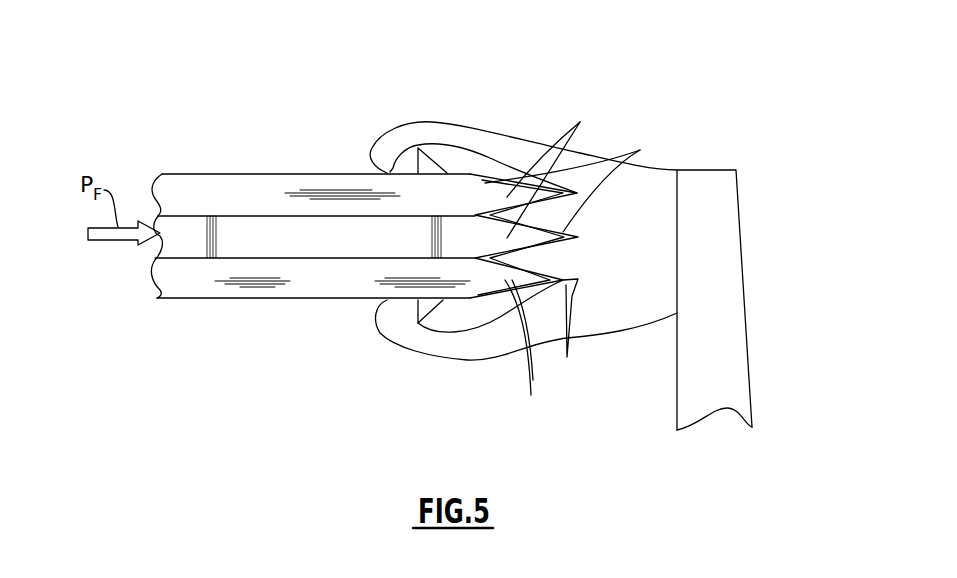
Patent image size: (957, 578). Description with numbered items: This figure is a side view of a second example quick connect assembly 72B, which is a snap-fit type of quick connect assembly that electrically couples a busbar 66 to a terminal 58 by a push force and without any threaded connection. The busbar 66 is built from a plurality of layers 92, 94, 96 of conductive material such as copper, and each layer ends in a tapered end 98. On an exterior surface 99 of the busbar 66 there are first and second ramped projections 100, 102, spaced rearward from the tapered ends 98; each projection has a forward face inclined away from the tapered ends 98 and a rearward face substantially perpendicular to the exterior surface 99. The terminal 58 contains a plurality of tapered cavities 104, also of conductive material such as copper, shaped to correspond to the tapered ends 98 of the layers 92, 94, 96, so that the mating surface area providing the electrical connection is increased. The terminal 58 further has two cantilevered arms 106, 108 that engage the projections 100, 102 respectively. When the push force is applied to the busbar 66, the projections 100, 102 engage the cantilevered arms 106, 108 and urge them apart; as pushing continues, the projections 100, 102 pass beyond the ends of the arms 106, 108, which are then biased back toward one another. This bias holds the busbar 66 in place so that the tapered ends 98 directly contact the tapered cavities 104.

The terminal 58 is at (765, 335).
The busbar 66 is at (364, 235).
The quick connect assembly 72B is at (534, 240).
The layer 92 is at (310, 288).
The layer 94 is at (258, 240).
The layer 96 is at (316, 169).
The tapered end 98 is at (580, 122).
The exterior surface 99 is at (349, 174).
The first ramped projection 100 is at (430, 160).
The second ramped projection 102 is at (430, 312).
The tapered cavity 104 is at (640, 150).
The cantilevered arm 106 is at (460, 132).
The cantilevered arm 108 is at (492, 350).